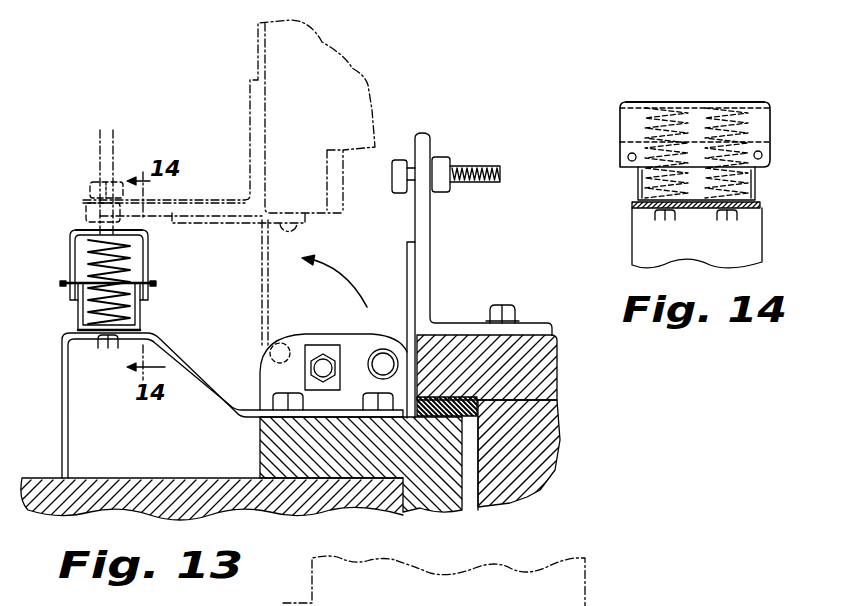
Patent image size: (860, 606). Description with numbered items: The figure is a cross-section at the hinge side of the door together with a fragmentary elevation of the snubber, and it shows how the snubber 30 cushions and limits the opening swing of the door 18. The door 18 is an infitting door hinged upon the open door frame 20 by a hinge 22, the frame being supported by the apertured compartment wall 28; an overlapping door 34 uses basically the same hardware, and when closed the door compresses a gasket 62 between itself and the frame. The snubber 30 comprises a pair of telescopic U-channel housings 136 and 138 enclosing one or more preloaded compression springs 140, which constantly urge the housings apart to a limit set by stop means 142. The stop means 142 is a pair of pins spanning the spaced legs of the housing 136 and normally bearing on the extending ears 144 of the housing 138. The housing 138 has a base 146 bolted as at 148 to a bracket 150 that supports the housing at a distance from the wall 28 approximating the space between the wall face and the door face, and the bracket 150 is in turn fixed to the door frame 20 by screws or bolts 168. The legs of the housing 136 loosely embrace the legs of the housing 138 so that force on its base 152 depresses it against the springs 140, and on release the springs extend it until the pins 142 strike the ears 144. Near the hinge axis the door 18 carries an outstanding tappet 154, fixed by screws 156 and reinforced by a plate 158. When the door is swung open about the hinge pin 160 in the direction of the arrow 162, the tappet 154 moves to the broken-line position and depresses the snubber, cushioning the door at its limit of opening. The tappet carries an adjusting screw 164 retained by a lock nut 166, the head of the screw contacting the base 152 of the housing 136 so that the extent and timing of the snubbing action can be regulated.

In FIG. 13, the infitting door 18 is at (365, 80).
In FIG. 13, the door frame 20 is at (385, 463).
In FIG. 13, the hinge 22 is at (345, 343).
In FIG. 13, the compartment wall 28 is at (49, 503).
In FIG. 13, the snubber 30 is at (108, 275).
In FIG. 14, the snubber 30 is at (688, 139).
In FIG. 13, the overlapping door 34 is at (590, 590).
In FIG. 13, the gasket 62 is at (490, 400).
In FIG. 13, the housing 136 is at (148, 255).
In FIG. 14, the housing 136 is at (620, 122).
In FIG. 13, the housing 138 is at (145, 303).
In FIG. 14, the housing 138 is at (638, 190).
In FIG. 13, the compression spring 140 is at (88, 303).
In FIG. 14, the compression spring 140 is at (693, 120).
In FIG. 13, the stop means 142 is at (62, 284).
In FIG. 14, the stop means 142 is at (776, 168).
In FIG. 13, the ear 144 is at (75, 270).
In FIG. 14, the ear 144 is at (630, 142).
In FIG. 13, the base 146 is at (140, 327).
In FIG. 14, the base 146 is at (757, 200).
In FIG. 13, the bolt 148 is at (105, 348).
In FIG. 14, the bolt 148 is at (722, 222).
In FIG. 13, the bracket 150 is at (65, 338).
In FIG. 14, the bracket 150 is at (632, 240).
In FIG. 13, the base 152 is at (75, 231).
In FIG. 14, the base 152 is at (715, 104).
In FIG. 13, the tappet 154 is at (90, 200).
In FIG. 13, the screw 156 is at (495, 308).
In FIG. 13, the plate 158 is at (407, 255).
In FIG. 13, the hinge pin 160 is at (278, 343).
In FIG. 13, the arrow 162 is at (357, 288).
In FIG. 13, the adjusting screw 164 is at (88, 215).
In FIG. 13, the lock nut 166 is at (90, 185).
In FIG. 13, the screw 168 is at (272, 400).